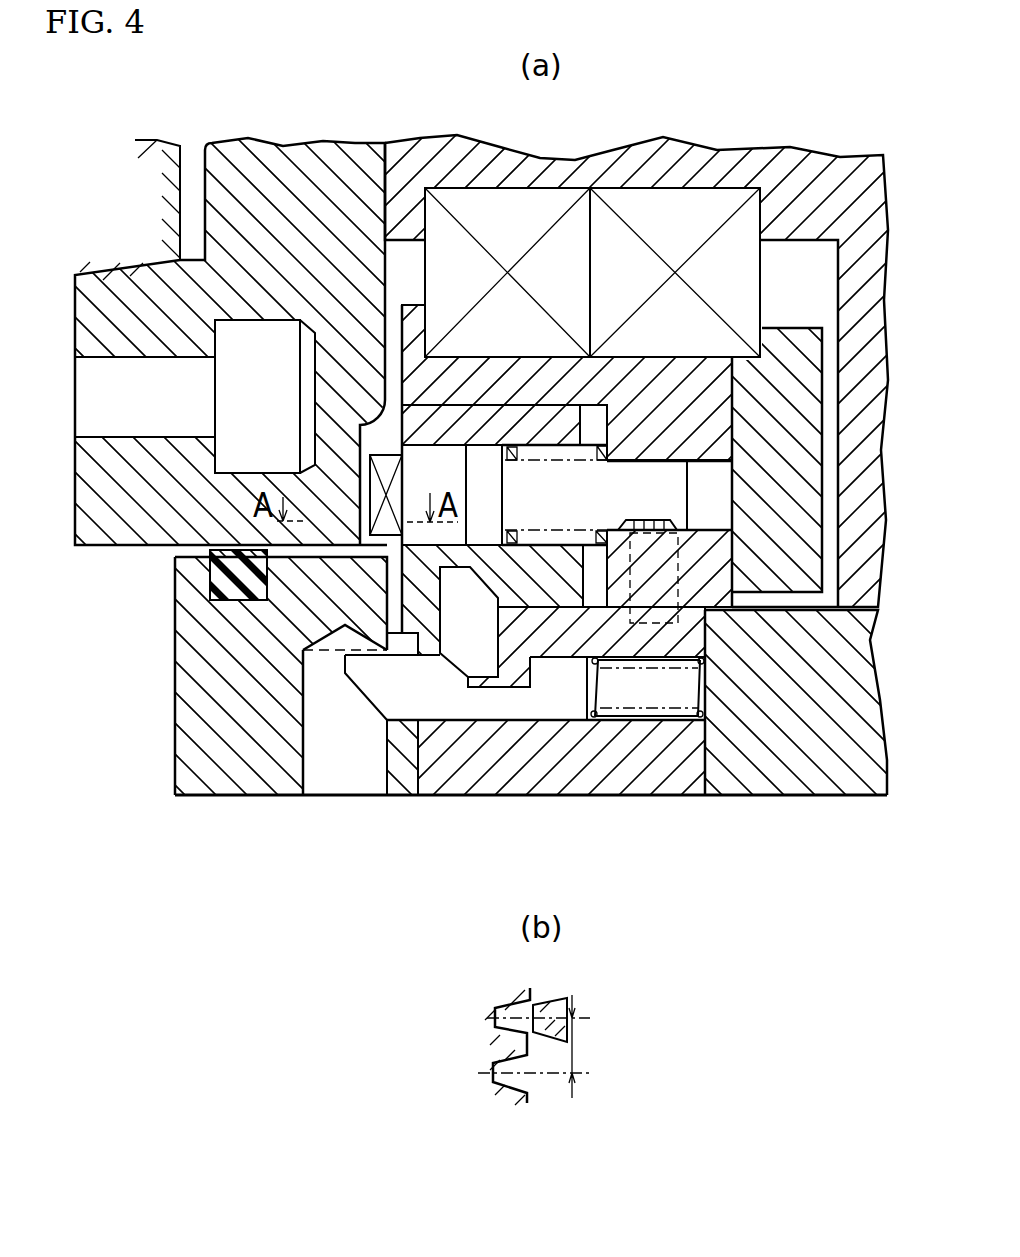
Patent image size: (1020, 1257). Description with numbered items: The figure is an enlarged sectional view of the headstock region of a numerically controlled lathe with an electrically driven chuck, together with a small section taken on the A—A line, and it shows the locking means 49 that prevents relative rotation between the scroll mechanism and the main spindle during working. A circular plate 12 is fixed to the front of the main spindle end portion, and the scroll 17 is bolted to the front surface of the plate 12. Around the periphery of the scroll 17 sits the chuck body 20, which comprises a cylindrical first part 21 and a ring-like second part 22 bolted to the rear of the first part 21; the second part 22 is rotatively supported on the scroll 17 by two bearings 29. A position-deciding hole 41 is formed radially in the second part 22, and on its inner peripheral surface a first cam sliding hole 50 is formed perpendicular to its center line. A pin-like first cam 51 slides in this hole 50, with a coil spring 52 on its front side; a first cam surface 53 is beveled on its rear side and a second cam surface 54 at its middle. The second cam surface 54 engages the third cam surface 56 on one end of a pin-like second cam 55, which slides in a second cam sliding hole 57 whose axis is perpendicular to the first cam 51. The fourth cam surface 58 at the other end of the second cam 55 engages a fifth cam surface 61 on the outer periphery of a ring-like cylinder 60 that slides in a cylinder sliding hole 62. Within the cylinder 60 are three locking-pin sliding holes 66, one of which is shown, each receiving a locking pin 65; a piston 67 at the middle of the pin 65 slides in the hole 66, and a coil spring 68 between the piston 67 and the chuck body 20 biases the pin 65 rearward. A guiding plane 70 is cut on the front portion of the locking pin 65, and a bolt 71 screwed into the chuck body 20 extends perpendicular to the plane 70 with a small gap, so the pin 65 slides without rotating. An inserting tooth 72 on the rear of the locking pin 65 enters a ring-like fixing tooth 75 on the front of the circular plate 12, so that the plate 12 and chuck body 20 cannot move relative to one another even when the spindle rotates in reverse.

The circular plate 12 is at (311, 158).
The scroll 17 is at (703, 158).
The chuck body 20 is at (709, 810).
The first part 21 is at (770, 784).
The second part 22 is at (232, 697).
The bearings 29 is at (608, 197).
The position-deciding hole 41 is at (300, 766).
The locking means 49 is at (807, 110).
The first cam sliding hole 50 is at (510, 500).
The first cam 51 is at (496, 720).
The coil spring 52 is at (611, 722).
The first cam surface 53 is at (362, 693).
The second cam surface 54 is at (466, 687).
The second cam 55 is at (470, 634).
The third cam surface 56 is at (450, 668).
The second cam sliding hole 57 is at (437, 638).
The fourth cam surface 58 is at (510, 500).
The cylinder 60 is at (517, 400).
The fifth cam surface 61 is at (476, 584).
The cylinder sliding hole 62 is at (471, 395).
The locking pin 65 is at (617, 483).
The locking-pin sliding hole 66 is at (507, 452).
The piston 67 is at (434, 476).
The coil spring 68 is at (564, 475).
The guiding plane 70 is at (648, 571).
The bolt 71 is at (700, 540).
The inserting tooth 72 is at (370, 476).
The fixing tooth 75 is at (372, 503).